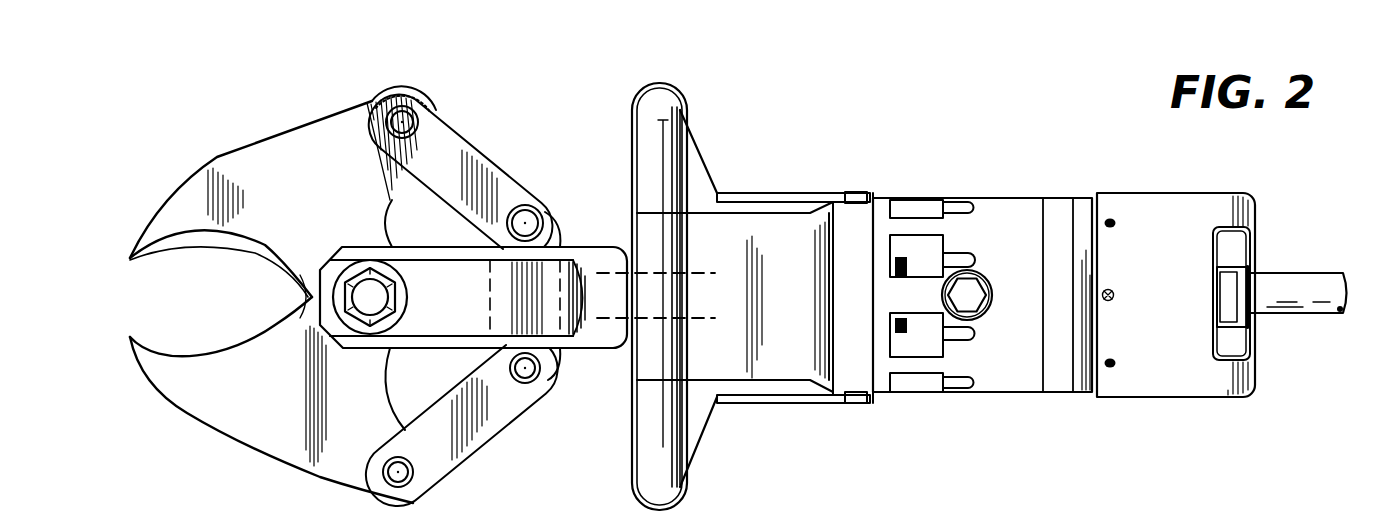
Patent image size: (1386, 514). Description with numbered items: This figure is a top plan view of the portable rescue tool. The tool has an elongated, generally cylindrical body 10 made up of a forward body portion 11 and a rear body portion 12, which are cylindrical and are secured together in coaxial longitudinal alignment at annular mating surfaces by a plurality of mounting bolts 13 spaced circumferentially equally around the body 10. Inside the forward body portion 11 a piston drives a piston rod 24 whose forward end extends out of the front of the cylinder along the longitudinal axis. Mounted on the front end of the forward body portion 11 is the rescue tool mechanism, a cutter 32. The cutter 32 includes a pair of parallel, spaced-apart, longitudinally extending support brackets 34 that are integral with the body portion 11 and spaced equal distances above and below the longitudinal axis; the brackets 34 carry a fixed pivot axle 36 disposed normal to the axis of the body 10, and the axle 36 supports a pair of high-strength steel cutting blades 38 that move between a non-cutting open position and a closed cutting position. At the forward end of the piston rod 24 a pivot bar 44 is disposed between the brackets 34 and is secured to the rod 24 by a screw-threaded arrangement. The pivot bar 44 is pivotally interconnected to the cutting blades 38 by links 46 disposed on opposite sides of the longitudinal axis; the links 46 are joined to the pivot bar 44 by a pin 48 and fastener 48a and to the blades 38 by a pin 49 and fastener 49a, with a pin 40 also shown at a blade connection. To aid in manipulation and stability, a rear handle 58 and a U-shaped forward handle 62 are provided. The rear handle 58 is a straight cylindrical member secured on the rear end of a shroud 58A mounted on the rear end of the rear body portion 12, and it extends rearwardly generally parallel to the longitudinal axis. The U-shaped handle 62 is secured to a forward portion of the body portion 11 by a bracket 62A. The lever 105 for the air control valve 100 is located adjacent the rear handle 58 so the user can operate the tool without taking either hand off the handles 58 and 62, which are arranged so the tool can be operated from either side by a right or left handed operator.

The tool body 10 is at (936, 157).
The forward body portion 11 is at (737, 220).
The rear body portion 12 is at (1007, 202).
The mounting bolts 13 is at (907, 263).
The piston rod 24 is at (613, 323).
The cutter 32 is at (350, 97).
The support brackets 34 is at (447, 348).
The pivot axle 36 is at (400, 298).
The cutting blades 38 is at (275, 148).
The pivot pin 40 is at (398, 472).
The pivot bar 44 is at (487, 240).
The links 46 is at (453, 157).
The pin 48 is at (527, 207).
The fastener 48a is at (553, 217).
The pin 49 is at (408, 103).
The fastener 49a is at (420, 122).
The rear handle 58 is at (1293, 277).
The shroud 58A is at (1173, 160).
The U-shaped forward handle 62 is at (677, 110).
The bracket 62A is at (810, 193).
The air control valve 100 is at (1235, 335).
The lever 105 is at (1247, 263).